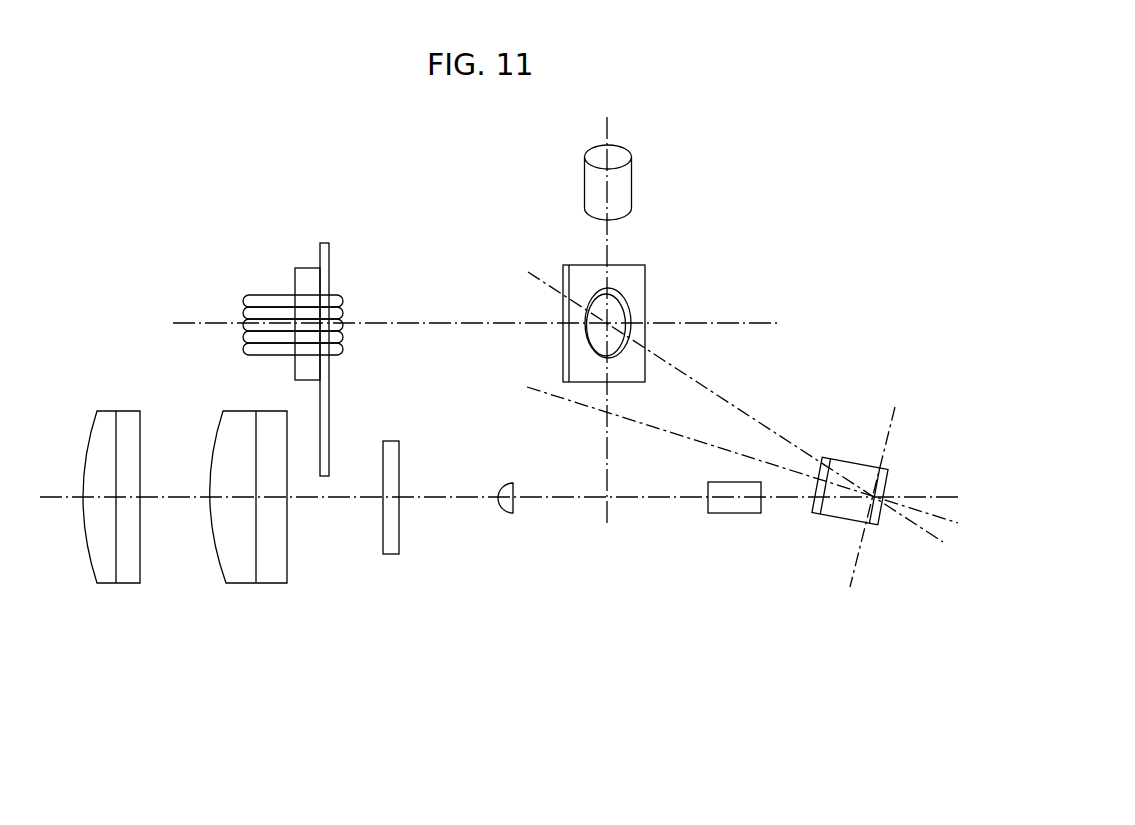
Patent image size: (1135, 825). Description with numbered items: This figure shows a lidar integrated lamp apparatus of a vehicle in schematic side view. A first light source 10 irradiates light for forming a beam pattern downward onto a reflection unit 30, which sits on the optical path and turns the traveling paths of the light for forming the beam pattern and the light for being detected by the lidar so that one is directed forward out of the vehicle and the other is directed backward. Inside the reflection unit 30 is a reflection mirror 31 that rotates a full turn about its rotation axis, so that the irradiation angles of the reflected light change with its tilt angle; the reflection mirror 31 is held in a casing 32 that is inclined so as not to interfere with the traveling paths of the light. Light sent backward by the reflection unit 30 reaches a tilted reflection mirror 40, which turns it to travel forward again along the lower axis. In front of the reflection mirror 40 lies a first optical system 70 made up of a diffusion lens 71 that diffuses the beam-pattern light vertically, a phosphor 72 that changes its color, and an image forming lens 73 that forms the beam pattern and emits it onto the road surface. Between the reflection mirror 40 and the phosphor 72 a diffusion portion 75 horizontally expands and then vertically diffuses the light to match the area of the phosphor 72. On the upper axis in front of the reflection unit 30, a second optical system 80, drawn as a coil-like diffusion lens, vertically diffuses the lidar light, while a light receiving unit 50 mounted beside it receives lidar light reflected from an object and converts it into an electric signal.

The first light source 10 is at (627, 195).
The reflection unit 30 is at (556, 258).
The reflection mirror 31 is at (615, 310).
The casing 32 is at (582, 348).
The reflection mirror 40 is at (857, 468).
The light receiving unit 50 is at (298, 275).
The first optical system 70 is at (298, 587).
The diffusion lens 71 is at (468, 594).
The phosphor 72 is at (388, 547).
The image forming lens 73 is at (230, 572).
The diffusion portion 75 is at (727, 510).
The second optical system 80 is at (248, 298).